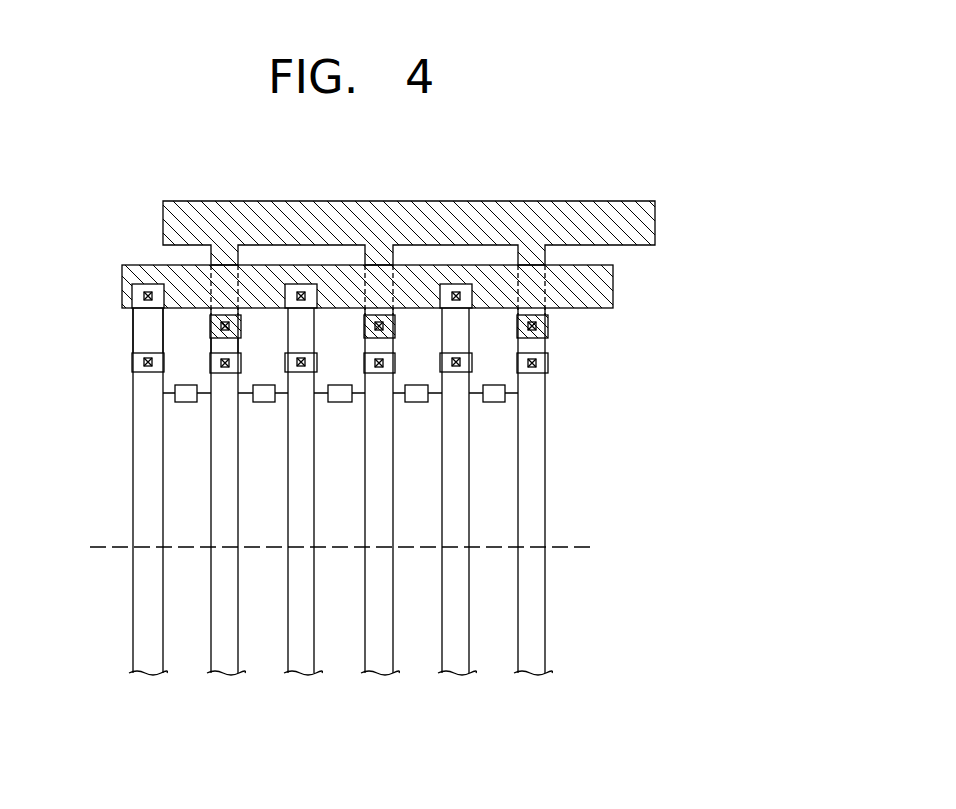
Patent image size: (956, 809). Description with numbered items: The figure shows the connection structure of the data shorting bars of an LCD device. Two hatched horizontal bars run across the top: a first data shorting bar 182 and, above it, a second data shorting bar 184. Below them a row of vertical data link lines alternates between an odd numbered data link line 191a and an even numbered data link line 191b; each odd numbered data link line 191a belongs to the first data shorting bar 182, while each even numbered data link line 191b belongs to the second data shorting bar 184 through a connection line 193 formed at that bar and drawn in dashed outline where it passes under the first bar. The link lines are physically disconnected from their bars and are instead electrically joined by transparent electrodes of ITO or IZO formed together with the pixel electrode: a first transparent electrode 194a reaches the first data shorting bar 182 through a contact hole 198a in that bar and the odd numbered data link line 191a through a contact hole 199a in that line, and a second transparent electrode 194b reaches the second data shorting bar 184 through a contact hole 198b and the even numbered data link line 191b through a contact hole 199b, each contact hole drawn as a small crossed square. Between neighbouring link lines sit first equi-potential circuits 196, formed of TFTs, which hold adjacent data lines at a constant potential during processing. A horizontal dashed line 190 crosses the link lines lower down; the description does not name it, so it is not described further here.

The first data shorting bar 182 is at (605, 285).
The second data shorting bar 184 is at (647, 223).
The cutting line 190 is at (560, 548).
The odd numbered data link line 191a is at (137, 628).
The even numbered data link line 191b is at (217, 628).
The connection line 193 is at (214, 253).
The first transparent electrode 194a is at (132, 327).
The second transparent electrode 194b is at (208, 327).
The first equi-potential circuit 196 is at (185, 403).
The contact hole of the first data shorting bar 198a is at (133, 287).
The contact hole of the second data shorting bar 198b is at (238, 318).
The contact hole of the odd numbered data link line 199a is at (145, 362).
The contact hole of the even numbered data link line 199b is at (241, 357).